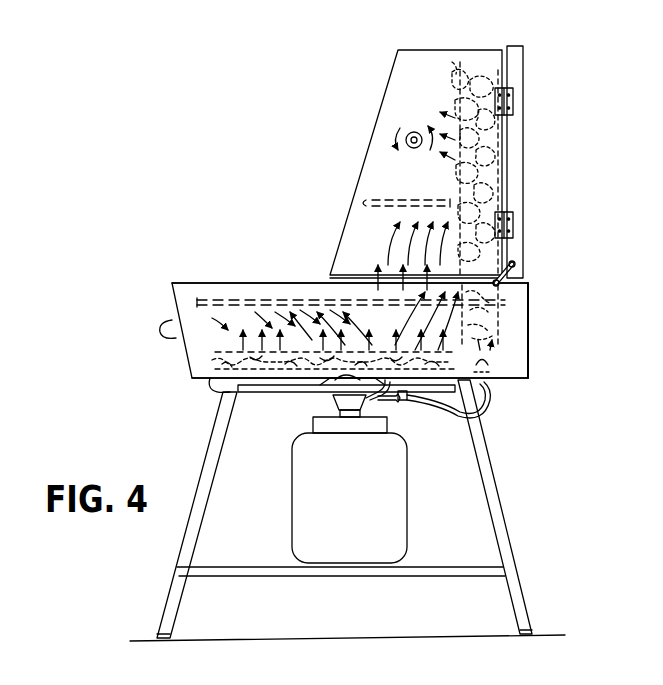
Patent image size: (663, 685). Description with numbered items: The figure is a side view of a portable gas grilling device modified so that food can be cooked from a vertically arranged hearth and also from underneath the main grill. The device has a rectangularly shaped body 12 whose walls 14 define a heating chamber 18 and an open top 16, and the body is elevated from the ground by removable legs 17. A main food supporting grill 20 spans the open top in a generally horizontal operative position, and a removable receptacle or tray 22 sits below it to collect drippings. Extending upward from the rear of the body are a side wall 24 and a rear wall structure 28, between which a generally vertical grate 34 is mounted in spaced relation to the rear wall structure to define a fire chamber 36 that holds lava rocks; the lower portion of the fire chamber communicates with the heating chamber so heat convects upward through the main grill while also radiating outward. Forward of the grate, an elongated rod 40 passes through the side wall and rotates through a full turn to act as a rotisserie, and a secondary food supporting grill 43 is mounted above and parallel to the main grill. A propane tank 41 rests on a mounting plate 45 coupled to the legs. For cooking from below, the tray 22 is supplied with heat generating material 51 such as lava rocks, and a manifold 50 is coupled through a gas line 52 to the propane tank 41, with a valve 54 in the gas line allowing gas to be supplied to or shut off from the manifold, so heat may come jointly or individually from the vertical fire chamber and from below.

The body 12 is at (364, 325).
The wall 14 is at (383, 304).
The open top 16 is at (295, 283).
The leg 17 is at (178, 557).
The heating chamber 18 is at (232, 345).
The main food supporting grill 20 is at (225, 302).
The removable receptacle 22 is at (270, 372).
The side wall 24 is at (470, 52).
The rear wall structure 28 is at (525, 160).
The grate 34 is at (458, 110).
The fire chamber 36 is at (500, 150).
The elongated rod 40 is at (406, 146).
The propane tank 41 is at (402, 510).
The secondary food supporting grill 43 is at (384, 200).
The mounting plate 45 is at (430, 578).
The manifold 50 is at (345, 380).
The heat generating material 51 is at (335, 378).
The gas line 52 is at (376, 400).
The valve 54 is at (406, 403).